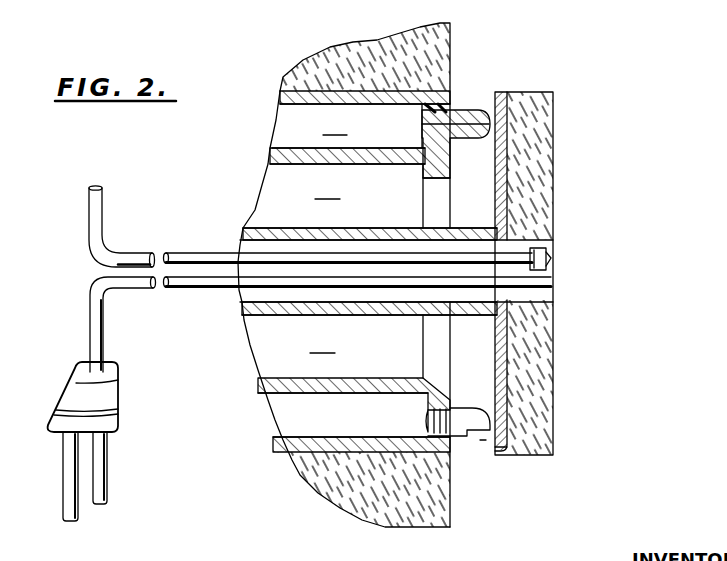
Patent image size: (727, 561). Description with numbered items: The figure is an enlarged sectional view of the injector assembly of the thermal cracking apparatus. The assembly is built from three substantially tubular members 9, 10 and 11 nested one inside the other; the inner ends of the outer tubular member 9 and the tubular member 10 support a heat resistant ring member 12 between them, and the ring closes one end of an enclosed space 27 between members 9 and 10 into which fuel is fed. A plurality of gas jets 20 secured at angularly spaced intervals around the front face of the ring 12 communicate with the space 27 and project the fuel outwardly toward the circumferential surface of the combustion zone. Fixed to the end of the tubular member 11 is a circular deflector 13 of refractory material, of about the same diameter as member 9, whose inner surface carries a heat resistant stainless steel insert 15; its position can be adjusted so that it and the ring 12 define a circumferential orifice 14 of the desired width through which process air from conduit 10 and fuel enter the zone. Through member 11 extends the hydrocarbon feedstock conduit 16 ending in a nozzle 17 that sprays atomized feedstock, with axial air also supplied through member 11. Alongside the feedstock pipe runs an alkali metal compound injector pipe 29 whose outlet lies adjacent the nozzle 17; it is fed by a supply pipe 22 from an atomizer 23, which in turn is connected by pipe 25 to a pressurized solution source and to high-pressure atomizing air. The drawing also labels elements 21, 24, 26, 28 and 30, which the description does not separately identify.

The tubular member 9 is at (283, 98).
The tubular member 10 is at (272, 154).
The tubular member 11 is at (250, 232).
The heat resistant ring member 12 is at (438, 110).
The circular deflector 13 is at (556, 418).
The circumferential orifice 14 is at (483, 440).
The heat resistant stainless steel insert 15 is at (500, 448).
The hydrocarbon feedstock conduit 16 is at (201, 255).
The nozzle or injector 17 is at (548, 258).
The gas jets 20 is at (468, 418).
The lower tube 21 is at (550, 285).
The supply pipe 22 is at (92, 324).
The atomizer 23 is at (102, 393).
The prong 24 is at (96, 474).
The pipe 25 is at (70, 468).
The bent tube 26 is at (100, 233).
The enclosed space 27 is at (354, 270).
The chamber 28 is at (369, 271).
The alkali metal compound injector pipe 29 is at (188, 288).
The lower sleeve layer 30 is at (240, 297).